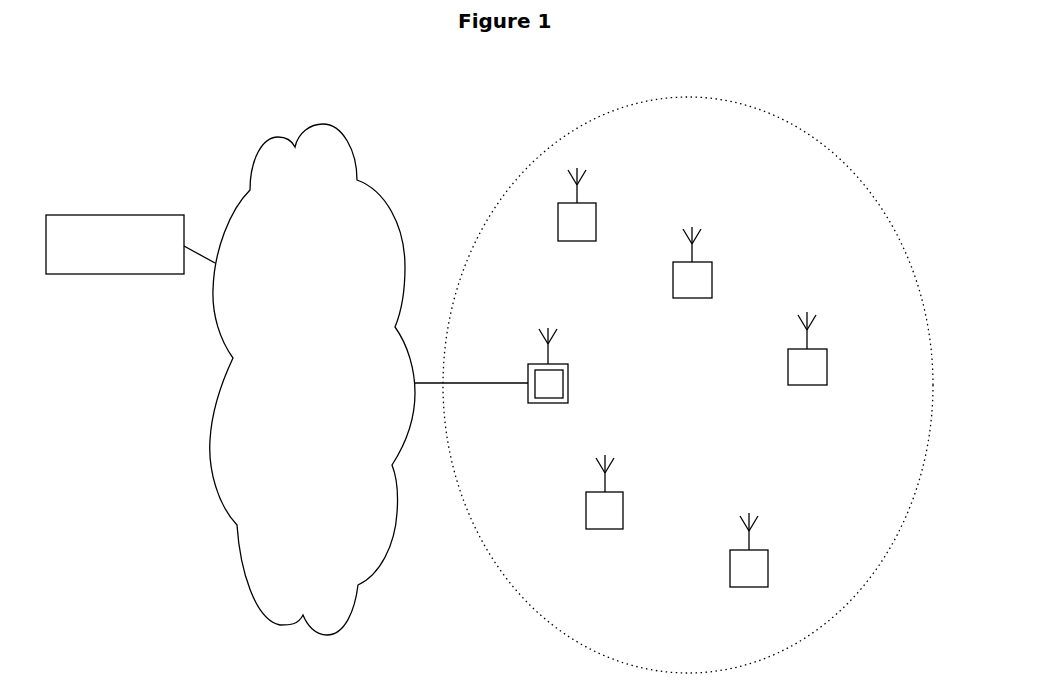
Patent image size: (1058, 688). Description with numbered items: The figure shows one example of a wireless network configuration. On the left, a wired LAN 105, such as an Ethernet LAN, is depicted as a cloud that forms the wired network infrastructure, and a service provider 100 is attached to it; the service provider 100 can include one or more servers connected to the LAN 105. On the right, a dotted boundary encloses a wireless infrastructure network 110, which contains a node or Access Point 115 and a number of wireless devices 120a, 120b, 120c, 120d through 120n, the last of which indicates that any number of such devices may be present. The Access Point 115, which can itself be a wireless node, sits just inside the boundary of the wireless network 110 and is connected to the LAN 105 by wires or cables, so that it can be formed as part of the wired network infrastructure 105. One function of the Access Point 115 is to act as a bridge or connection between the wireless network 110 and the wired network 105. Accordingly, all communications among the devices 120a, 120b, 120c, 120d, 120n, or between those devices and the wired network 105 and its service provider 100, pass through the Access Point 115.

The service provider 100 is at (130, 244).
The LAN 105 is at (312, 379).
The wireless infrastructure network 110 is at (697, 369).
The Access Point 115 is at (491, 381).
The device 120a is at (578, 220).
The device 120b is at (692, 278).
The device 120c is at (807, 364).
The device 120d is at (606, 506).
The device 120n is at (749, 565).